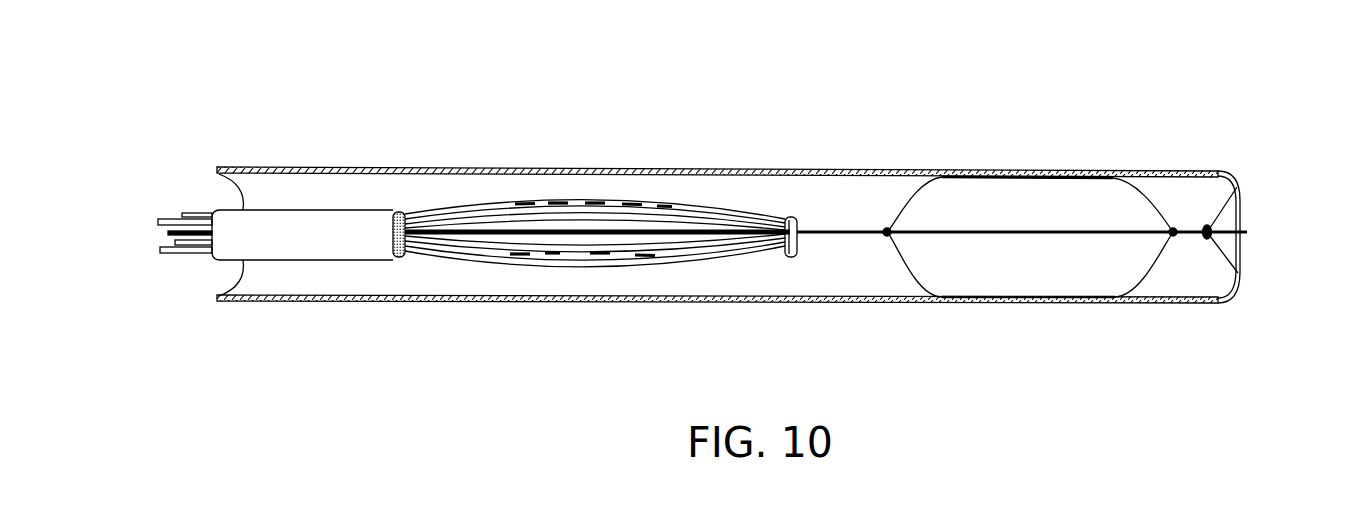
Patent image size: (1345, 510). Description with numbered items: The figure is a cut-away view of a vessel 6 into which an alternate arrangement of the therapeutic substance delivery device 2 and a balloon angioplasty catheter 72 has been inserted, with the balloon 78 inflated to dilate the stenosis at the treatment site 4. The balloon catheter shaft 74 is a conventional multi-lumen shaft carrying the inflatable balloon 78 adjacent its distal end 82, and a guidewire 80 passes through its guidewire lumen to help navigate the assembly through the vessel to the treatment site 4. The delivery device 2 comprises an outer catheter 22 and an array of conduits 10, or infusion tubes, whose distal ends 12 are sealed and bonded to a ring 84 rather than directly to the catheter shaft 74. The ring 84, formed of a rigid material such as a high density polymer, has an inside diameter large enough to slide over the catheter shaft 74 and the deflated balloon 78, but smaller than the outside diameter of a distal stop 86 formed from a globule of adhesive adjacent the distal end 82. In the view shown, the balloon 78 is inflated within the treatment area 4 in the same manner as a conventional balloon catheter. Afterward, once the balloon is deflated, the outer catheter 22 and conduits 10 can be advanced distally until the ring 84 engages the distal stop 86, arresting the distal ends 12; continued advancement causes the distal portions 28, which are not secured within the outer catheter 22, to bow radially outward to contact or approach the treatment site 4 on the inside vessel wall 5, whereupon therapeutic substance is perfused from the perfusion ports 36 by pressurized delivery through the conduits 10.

The therapeutic substance delivery device 2 is at (488, 233).
The treatment site 4 is at (1098, 297).
The vessel wall 5 is at (840, 297).
The vessel 6 is at (1173, 303).
The conduits 10 is at (524, 233).
The distal ends of the conduits 12 is at (772, 257).
The outer catheter 22 is at (318, 228).
The distal portions of the conduits 28 is at (694, 207).
The perfusion ports 36 is at (594, 203).
The balloon angioplasty catheter 72 is at (1051, 235).
The balloon catheter shaft 74 is at (828, 232).
The balloon 78 is at (1157, 207).
The guidewire 80 is at (1241, 240).
The distal end of the balloon catheter shaft 82 is at (1210, 236).
The ring 84 is at (792, 220).
The distal stop 86 is at (1237, 187).